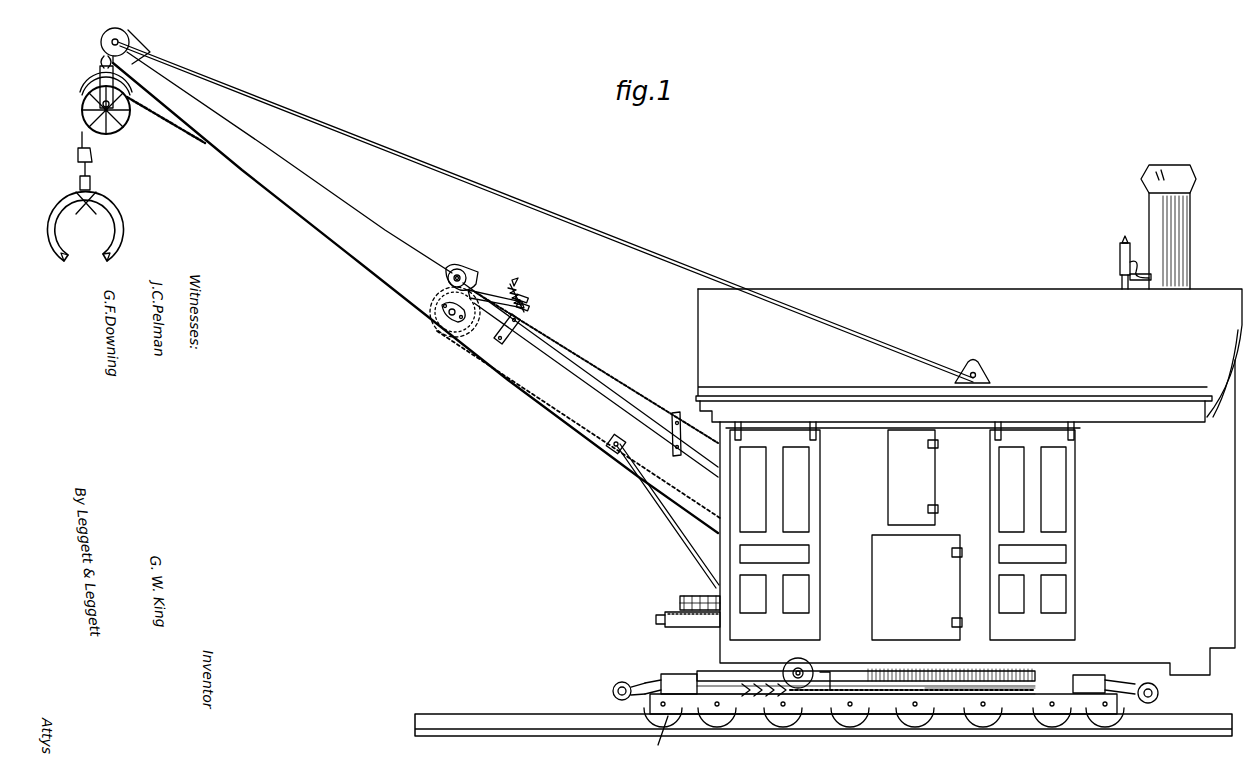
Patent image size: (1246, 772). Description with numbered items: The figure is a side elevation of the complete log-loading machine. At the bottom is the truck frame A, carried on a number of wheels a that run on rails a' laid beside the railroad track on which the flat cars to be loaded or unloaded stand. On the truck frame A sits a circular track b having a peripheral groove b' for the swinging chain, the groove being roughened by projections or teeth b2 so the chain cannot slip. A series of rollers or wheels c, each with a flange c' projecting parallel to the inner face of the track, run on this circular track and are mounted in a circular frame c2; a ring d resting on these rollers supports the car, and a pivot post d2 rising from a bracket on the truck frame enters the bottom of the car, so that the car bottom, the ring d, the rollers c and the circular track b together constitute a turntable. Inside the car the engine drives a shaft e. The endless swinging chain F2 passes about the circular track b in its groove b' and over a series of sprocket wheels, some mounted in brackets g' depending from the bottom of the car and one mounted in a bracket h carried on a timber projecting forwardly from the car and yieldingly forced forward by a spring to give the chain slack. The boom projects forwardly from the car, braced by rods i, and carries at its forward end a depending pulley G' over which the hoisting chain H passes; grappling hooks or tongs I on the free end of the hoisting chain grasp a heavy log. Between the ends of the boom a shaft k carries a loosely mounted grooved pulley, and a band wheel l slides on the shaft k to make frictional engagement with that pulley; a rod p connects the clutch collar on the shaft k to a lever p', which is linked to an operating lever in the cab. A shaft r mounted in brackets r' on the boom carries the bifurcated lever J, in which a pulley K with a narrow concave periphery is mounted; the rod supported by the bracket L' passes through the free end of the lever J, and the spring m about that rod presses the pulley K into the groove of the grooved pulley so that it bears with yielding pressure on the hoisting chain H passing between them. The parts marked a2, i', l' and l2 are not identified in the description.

The truck frame A is at (712, 669).
The wheels a is at (884, 721).
The rails a' is at (823, 733).
The bearing a2 is at (826, 672).
The circular track b is at (1099, 689).
The peripheral groove b' is at (676, 687).
The projections or teeth b2 is at (756, 696).
The rollers or wheels c is at (866, 663).
The flange c' is at (866, 671).
The circular frame c2 is at (848, 672).
The ring d is at (402, 300).
The pivot post d2 is at (922, 672).
The shaft e is at (528, 295).
The brackets g' is at (815, 658).
The bracket h is at (690, 596).
The rods i is at (554, 212).
The lower stay cable i' is at (662, 511).
The shaft k is at (450, 320).
The band wheel l is at (532, 298).
The rod end l' is at (525, 276).
The anchor rod l2 is at (690, 616).
The spring m is at (530, 308).
The rod p is at (590, 380).
The lever p' is at (686, 434).
The shaft r is at (466, 276).
The brackets r' is at (449, 267).
The endless chain F2 is at (680, 604).
The depending pulley G' is at (108, 97).
The hoisting chain H is at (190, 134).
The grappling hooks or tongs I is at (96, 239).
The lever J is at (482, 292).
The pulley K is at (470, 270).
The bracket L' is at (507, 334).